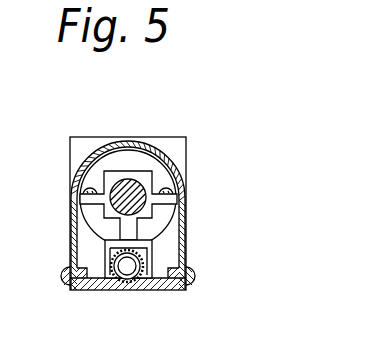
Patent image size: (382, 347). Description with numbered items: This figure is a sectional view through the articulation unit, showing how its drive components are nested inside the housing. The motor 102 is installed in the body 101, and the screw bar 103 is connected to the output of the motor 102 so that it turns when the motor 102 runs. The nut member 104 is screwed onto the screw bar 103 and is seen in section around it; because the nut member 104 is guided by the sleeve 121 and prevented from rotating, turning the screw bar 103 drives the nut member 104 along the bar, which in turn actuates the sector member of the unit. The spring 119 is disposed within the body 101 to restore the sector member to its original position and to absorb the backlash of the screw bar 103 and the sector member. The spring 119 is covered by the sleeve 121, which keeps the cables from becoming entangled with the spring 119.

The body 101 is at (184, 152).
The motor 102 is at (127, 157).
The screw bar 103 is at (138, 200).
The nut member 104 is at (147, 176).
The spring 119 is at (123, 278).
The sleeve 121 is at (135, 258).